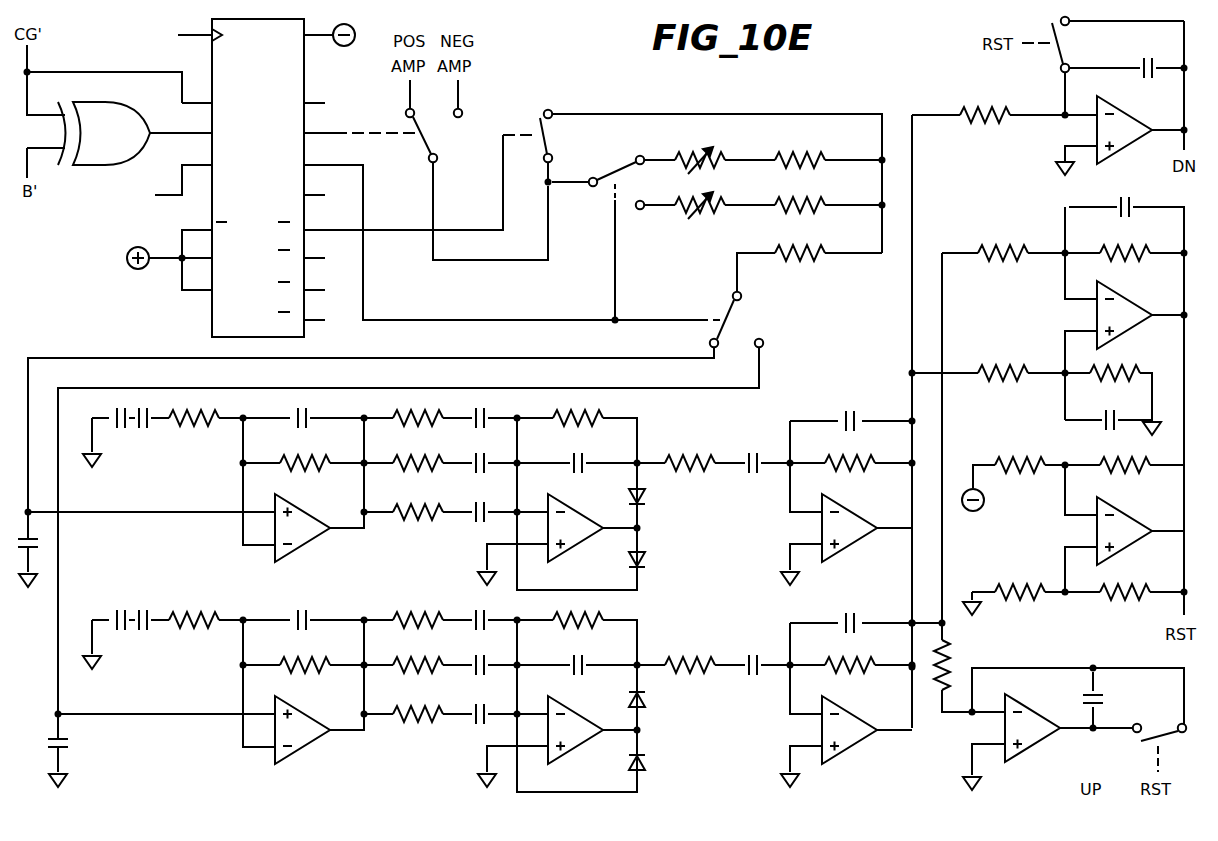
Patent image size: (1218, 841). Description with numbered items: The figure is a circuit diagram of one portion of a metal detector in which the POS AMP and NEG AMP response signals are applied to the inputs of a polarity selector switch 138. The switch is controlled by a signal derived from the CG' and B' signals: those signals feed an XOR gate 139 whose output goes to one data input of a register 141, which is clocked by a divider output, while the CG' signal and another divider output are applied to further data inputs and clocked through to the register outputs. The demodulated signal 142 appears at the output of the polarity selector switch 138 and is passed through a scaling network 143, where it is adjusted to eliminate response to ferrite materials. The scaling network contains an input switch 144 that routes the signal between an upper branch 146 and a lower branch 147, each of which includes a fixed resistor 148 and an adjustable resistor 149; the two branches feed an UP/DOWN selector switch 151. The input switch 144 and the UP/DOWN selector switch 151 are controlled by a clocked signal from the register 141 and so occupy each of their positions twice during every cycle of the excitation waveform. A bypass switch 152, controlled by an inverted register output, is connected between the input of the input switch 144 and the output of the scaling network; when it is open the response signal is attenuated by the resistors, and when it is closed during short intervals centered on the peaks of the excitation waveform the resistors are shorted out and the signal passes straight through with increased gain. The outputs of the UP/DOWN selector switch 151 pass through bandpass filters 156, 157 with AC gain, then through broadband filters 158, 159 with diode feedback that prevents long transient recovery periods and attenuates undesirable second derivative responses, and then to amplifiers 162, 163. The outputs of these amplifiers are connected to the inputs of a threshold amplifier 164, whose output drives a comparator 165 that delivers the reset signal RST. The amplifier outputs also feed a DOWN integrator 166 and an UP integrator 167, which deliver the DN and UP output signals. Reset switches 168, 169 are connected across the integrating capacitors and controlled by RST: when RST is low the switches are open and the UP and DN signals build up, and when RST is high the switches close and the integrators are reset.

The polarity selector switch 138 is at (432, 138).
The XOR gate 139 is at (105, 160).
The register 141 is at (220, 305).
The demodulated signal 142 is at (467, 262).
The scaling network 143 is at (666, 222).
The input switch 144 is at (606, 196).
The upper branch 146 is at (858, 150).
The lower branch 147 is at (848, 205).
The fixed resistor 148 is at (822, 168).
The adjustable resistor 149 is at (726, 200).
The UP/DOWN selector switch 151 is at (740, 313).
The bypass switch 152 is at (549, 136).
The bandpass filter 156 is at (240, 556).
The bandpass filter 157 is at (240, 758).
The broadband filter 158 is at (476, 539).
The broadband filter 159 is at (476, 737).
The amplifier 162 is at (795, 531).
The amplifier 163 is at (795, 729).
The threshold amplifier 164 is at (1060, 314).
The comparator 165 is at (1068, 529).
The DOWN integrator 166 is at (1056, 133).
The UP integrator 167 is at (1052, 684).
The reset switch 168 is at (1062, 55).
The reset switch 169 is at (1170, 726).